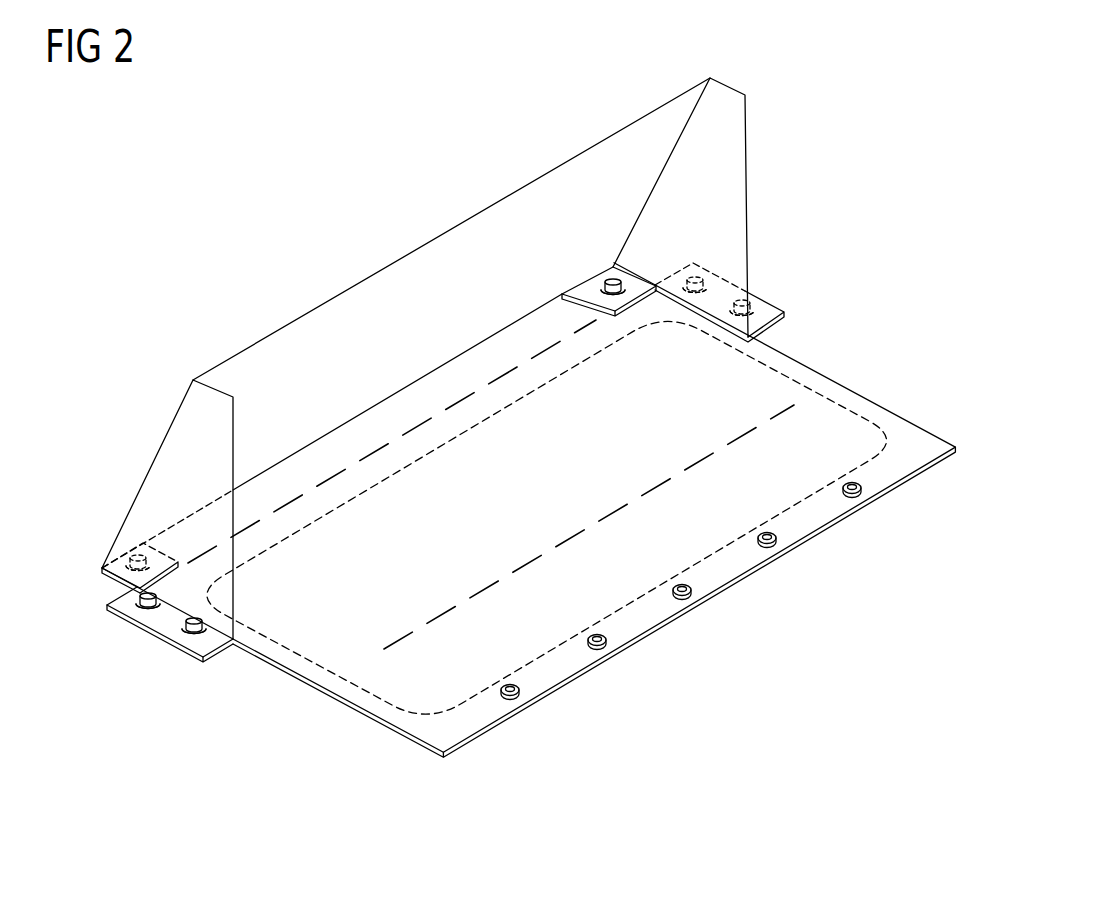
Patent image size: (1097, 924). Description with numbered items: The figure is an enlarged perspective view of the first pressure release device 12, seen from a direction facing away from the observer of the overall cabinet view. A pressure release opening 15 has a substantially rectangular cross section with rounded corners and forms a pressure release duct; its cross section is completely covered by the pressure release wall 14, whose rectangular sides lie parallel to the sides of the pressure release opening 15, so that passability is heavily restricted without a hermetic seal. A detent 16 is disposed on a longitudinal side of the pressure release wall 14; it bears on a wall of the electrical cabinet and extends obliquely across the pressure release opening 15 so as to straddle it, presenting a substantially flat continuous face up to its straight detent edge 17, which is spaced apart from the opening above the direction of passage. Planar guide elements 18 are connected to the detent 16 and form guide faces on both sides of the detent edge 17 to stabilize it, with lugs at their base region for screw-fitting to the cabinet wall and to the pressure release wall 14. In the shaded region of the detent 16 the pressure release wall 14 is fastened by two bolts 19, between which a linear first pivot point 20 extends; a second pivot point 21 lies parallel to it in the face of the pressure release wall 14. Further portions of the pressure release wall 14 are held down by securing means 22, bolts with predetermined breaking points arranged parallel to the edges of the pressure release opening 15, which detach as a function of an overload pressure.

The first pressure release device 12 is at (197, 722).
The pressure release wall 14 is at (328, 692).
The pressure release opening 15 is at (843, 428).
The detent 16 is at (102, 568).
The detent edge 17 is at (461, 224).
The guide elements 18 is at (750, 175).
The bolts 19 is at (612, 276).
The first pivot point 20 is at (420, 426).
The second pivot point 21 is at (580, 525).
The securing means 22 is at (513, 698).